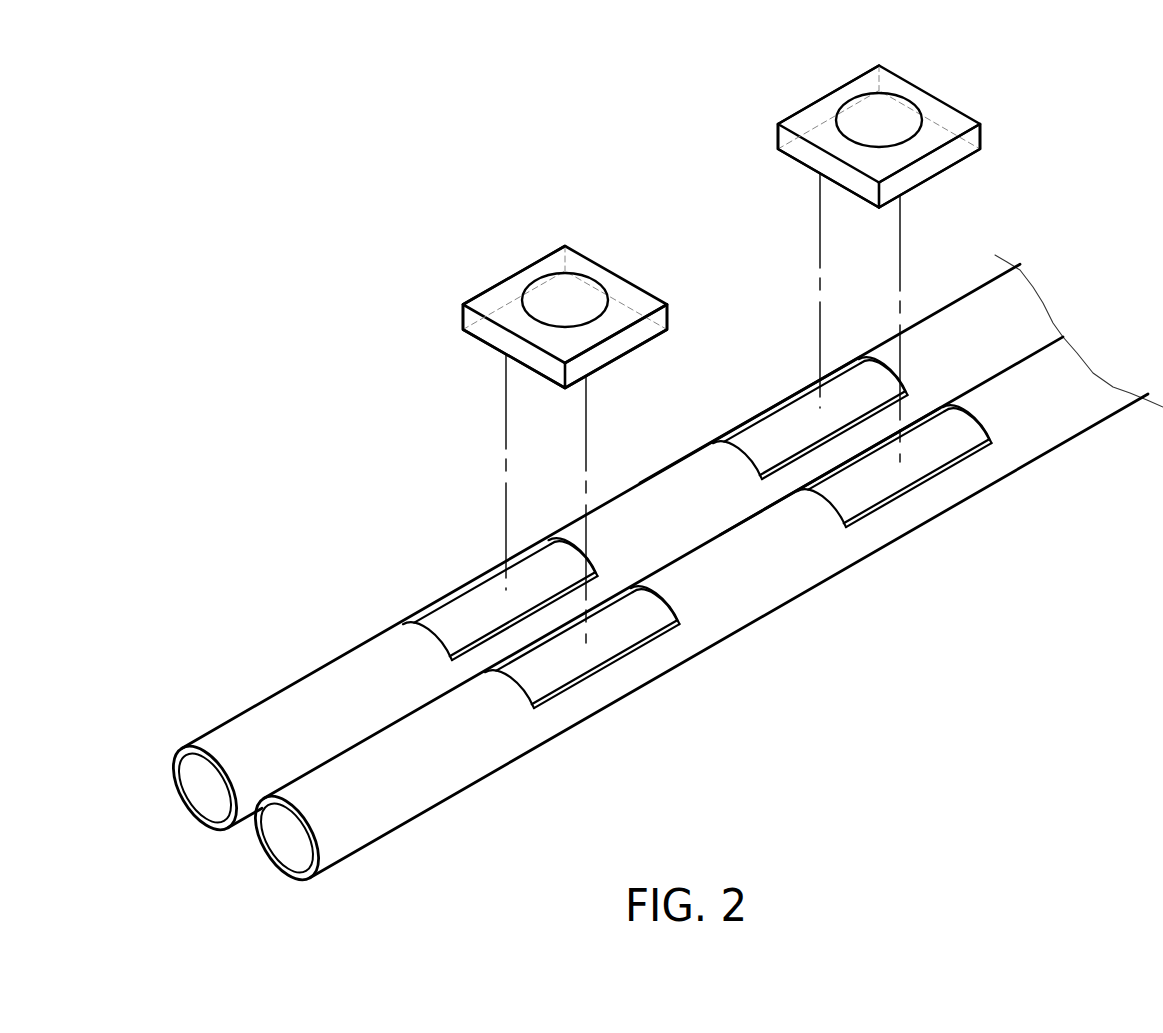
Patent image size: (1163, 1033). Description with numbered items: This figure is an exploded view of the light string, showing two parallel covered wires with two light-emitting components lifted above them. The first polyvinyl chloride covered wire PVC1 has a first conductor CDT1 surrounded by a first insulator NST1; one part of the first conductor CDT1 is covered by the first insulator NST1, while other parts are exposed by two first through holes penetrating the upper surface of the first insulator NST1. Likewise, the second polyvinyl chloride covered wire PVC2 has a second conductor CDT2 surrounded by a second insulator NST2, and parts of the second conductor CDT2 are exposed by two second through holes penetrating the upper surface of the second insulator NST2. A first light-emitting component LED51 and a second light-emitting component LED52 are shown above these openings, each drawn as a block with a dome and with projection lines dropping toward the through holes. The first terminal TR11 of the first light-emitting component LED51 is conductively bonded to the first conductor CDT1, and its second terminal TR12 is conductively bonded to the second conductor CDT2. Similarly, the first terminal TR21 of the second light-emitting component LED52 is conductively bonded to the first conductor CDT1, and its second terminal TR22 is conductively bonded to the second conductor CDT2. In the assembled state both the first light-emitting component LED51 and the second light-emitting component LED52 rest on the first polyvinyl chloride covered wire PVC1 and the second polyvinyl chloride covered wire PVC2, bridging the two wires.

The first polyvinyl chloride covered wire PVC1 is at (255, 678).
The second polyvinyl chloride covered wire PVC2 is at (430, 852).
The first conductor CDT1 is at (480, 602).
The second conductor CDT2 is at (567, 665).
The first insulator NST1 is at (703, 468).
The second insulator NST2 is at (777, 575).
The first light-emitting component LED51 is at (613, 283).
The second light-emitting component LED52 is at (930, 103).
The first terminal of the first light-emitting component TR11 is at (497, 293).
The second terminal of the first light-emitting component TR12 is at (640, 346).
The first terminal of the second light-emitting component TR21 is at (808, 106).
The second terminal of the second light-emitting component TR22 is at (933, 180).